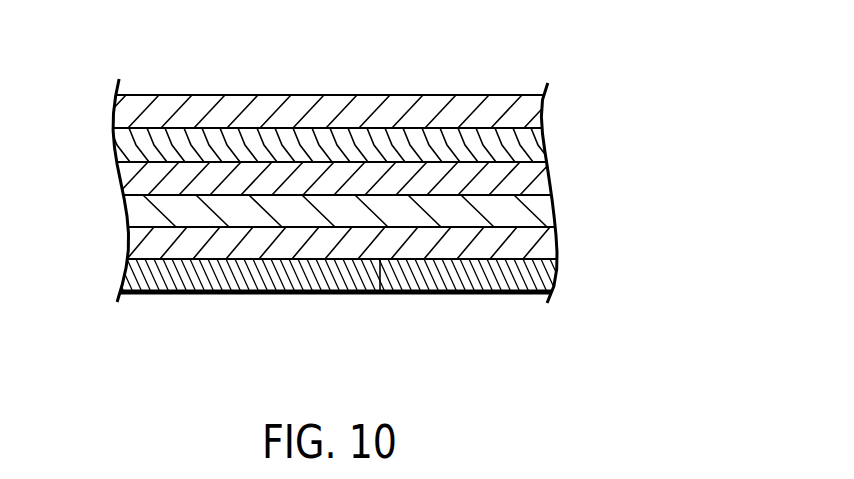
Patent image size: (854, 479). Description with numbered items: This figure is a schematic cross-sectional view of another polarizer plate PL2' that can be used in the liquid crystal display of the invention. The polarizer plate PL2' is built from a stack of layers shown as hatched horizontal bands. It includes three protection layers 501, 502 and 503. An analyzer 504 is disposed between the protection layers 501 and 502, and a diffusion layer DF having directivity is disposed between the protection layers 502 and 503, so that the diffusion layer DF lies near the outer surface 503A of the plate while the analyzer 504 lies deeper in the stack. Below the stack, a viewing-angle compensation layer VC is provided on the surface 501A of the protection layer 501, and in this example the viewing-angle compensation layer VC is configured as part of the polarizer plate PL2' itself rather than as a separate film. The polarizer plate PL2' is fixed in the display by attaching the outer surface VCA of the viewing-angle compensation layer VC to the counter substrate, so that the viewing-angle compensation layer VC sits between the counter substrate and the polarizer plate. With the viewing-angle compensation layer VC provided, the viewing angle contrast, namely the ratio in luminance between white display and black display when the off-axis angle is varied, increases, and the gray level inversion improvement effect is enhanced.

The protection layer 503 is at (128, 110).
The diffusion layer DF is at (130, 147).
The protection layer 502 is at (132, 178).
The analyzer 504 is at (135, 212).
The protection layer 501 is at (135, 245).
The viewing-angle compensation layer VC is at (137, 281).
The surface of the polarizer plate 503A is at (393, 93).
The polarizer plate PL2' is at (403, 176).
The outer surface of the viewing-angle compensation layer VCA is at (208, 293).
The surface of the protection layer 501A is at (378, 293).